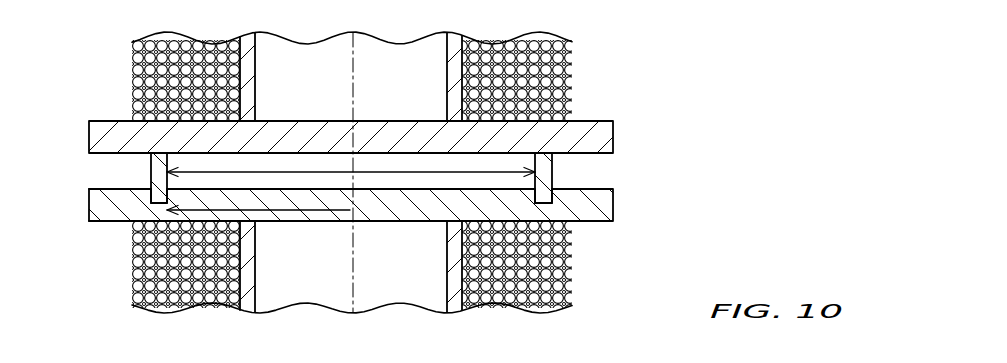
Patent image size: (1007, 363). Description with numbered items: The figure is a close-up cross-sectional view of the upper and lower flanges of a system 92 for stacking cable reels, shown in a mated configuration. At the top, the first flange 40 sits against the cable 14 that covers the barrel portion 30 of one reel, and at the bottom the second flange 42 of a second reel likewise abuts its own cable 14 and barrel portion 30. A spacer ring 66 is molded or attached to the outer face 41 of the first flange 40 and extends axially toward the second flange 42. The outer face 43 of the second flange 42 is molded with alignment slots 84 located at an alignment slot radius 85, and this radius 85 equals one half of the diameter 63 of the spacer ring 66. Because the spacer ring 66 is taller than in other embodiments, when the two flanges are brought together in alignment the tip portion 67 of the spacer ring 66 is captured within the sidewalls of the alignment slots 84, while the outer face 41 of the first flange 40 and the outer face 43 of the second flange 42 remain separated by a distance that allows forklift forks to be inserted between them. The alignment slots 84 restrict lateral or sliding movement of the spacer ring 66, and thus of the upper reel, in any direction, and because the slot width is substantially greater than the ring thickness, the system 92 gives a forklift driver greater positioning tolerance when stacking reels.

The cable 14 is at (572, 62).
The barrel portion 30 is at (255, 78).
The first flange 40 is at (613, 137).
The outer face of the first flange 41 is at (597, 160).
The second flange 42 is at (89, 200).
The outer face of the second flange 43 is at (95, 186).
The diameter of the spacer ring 63 is at (425, 172).
The spacer ring 66 is at (553, 173).
The tip portion of the spacer ring 67 is at (160, 193).
The alignment slots 84 is at (143, 222).
The alignment slot radius 85 is at (288, 210).
The system for stacking cable reels 92 is at (660, 65).